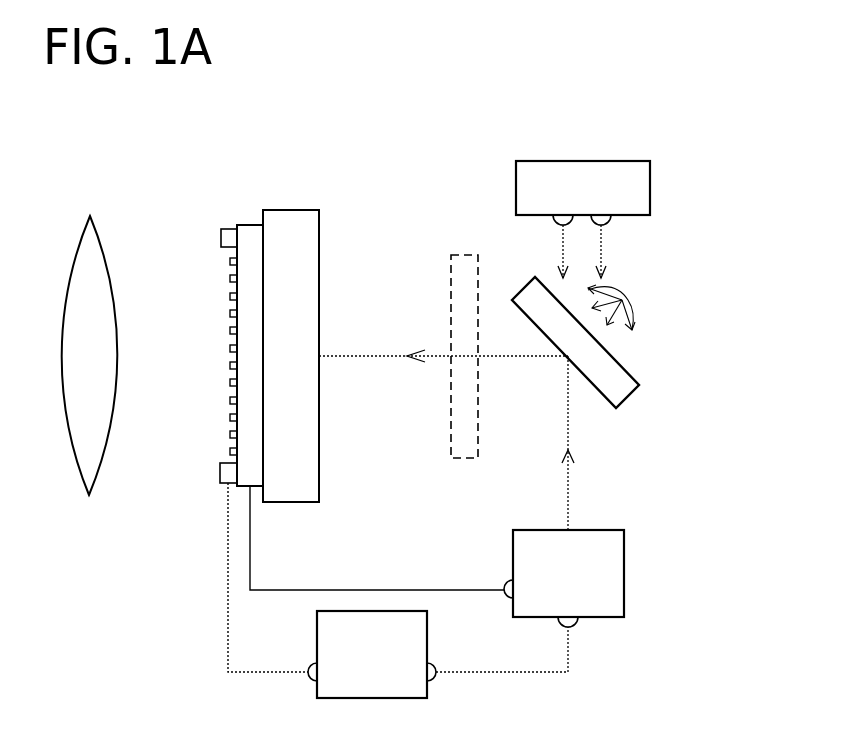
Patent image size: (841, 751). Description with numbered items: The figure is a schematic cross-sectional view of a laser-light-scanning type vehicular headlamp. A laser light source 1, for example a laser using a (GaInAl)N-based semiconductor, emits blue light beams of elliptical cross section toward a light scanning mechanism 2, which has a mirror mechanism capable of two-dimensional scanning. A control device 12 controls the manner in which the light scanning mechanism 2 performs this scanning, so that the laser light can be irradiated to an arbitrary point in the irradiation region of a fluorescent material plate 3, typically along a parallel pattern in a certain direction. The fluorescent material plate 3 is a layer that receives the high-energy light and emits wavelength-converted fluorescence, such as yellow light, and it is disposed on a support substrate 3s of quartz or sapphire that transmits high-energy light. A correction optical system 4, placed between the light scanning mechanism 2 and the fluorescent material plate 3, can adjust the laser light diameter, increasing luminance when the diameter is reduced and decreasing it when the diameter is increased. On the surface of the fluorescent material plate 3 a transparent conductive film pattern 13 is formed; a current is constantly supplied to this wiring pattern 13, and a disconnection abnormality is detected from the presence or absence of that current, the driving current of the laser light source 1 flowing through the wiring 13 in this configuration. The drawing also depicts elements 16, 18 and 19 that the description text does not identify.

The laser light source 1 is at (624, 592).
The light scanning mechanism 2 is at (617, 363).
The fluorescent material plate 3 is at (250, 255).
The support substrate 3s is at (292, 228).
The correction optical system 4 is at (455, 250).
The control device 12 is at (650, 188).
The transparent conductive film pattern 13 is at (233, 298).
The wiring 16 is at (290, 590).
The control unit 18 is at (375, 698).
The lens 19 is at (93, 258).